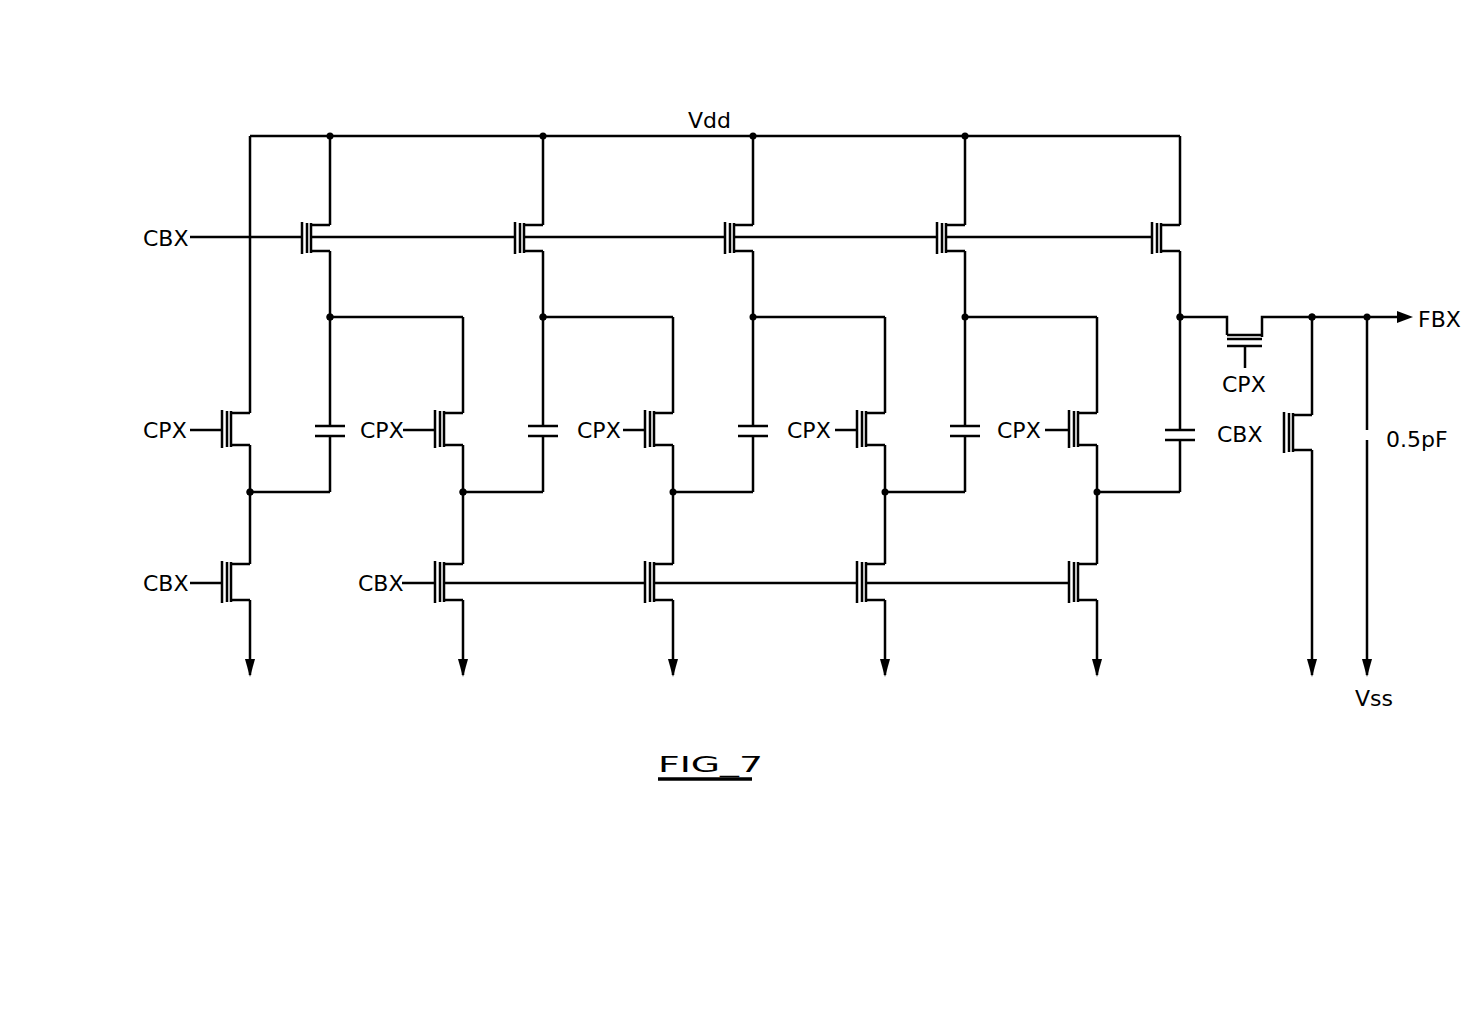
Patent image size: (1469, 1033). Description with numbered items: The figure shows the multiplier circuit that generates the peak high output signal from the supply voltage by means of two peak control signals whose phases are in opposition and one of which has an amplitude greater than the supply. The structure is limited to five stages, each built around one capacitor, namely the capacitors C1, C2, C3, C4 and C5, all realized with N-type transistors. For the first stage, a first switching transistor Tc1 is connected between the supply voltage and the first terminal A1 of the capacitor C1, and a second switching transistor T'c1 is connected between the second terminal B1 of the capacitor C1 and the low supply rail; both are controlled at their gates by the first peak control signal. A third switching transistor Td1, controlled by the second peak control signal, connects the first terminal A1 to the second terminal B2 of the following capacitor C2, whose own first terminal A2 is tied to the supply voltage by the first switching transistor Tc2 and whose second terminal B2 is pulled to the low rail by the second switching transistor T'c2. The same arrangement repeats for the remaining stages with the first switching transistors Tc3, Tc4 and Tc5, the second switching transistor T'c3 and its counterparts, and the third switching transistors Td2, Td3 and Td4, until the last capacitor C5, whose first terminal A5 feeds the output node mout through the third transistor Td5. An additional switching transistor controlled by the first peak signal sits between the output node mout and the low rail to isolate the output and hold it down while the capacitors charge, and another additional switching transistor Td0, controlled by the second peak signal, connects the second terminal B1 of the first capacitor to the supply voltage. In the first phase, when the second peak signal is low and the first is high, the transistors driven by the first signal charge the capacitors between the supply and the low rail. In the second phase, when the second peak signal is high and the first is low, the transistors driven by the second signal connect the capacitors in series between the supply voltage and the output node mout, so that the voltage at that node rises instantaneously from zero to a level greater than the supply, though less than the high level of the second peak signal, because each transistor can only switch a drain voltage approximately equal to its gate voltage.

The first switching transistor Tc1 is at (326, 229).
The first switching transistor Tc2 is at (538, 229).
The first switching transistor Tc3 is at (748, 231).
The first switching transistor Tc4 is at (960, 232).
The first switching transistor Tc5 is at (1172, 234).
The switching transistor Td0 is at (224, 410).
The third switching transistor Td1 is at (437, 410).
The third switching transistor Td2 is at (646, 413).
The third switching transistor Td3 is at (857, 412).
The third switching transistor Td4 is at (1069, 413).
The third switching transistor Td5 is at (1250, 334).
The second switching transistor T'c1 is at (274, 583).
The second switching transistor T'c2 is at (497, 563).
The second switching transistor T'c3 is at (708, 563).
The capacitor C1 is at (324, 424).
The capacitor C2 is at (535, 422).
The capacitor C3 is at (745, 424).
The capacitor C4 is at (960, 424).
The capacitor C5 is at (1168, 428).
The first terminal A1 is at (333, 315).
The first terminal A2 is at (546, 315).
The first terminal A5 is at (1183, 318).
The second terminal B1 is at (247, 491).
The second terminal B2 is at (460, 491).
The output node mout is at (1311, 322).